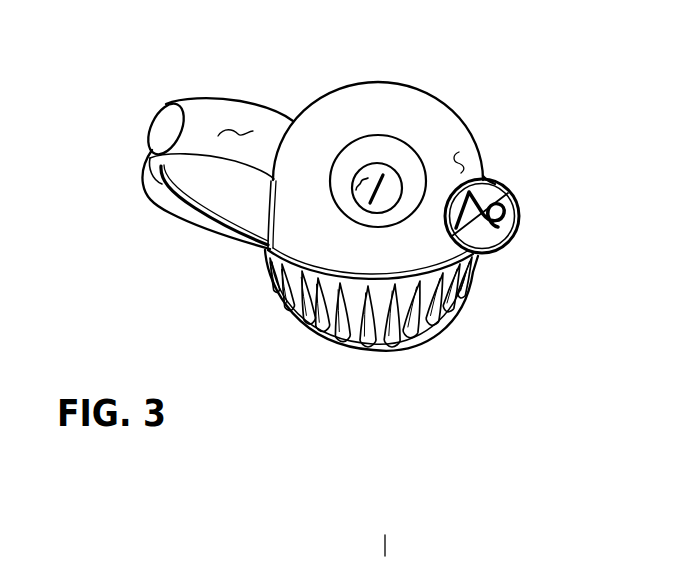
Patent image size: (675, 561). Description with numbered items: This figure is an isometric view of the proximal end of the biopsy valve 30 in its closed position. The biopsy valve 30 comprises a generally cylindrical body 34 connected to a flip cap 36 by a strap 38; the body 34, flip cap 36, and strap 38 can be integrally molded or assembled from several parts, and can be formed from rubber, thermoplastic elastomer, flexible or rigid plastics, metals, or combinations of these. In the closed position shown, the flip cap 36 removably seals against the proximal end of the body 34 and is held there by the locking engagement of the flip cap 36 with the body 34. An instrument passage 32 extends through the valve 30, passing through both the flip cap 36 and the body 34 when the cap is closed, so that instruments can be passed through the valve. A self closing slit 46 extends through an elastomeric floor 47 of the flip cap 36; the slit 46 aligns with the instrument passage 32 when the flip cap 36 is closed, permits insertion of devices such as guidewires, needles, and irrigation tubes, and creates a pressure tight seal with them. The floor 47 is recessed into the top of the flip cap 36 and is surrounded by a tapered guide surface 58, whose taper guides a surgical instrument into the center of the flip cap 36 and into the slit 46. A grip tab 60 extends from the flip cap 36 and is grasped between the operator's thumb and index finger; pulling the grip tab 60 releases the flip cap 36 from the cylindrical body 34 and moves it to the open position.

The biopsy valve 30 is at (185, 75).
The instrument passage 32 is at (392, 168).
The cylindrical body 34 is at (403, 293).
The flip cap 36 is at (464, 146).
The strap 38 is at (228, 130).
The self closing slit 46 is at (373, 178).
The elastomeric floor 47 is at (370, 178).
The tapered guide surface 58 is at (413, 173).
The grip tab 60 is at (517, 233).